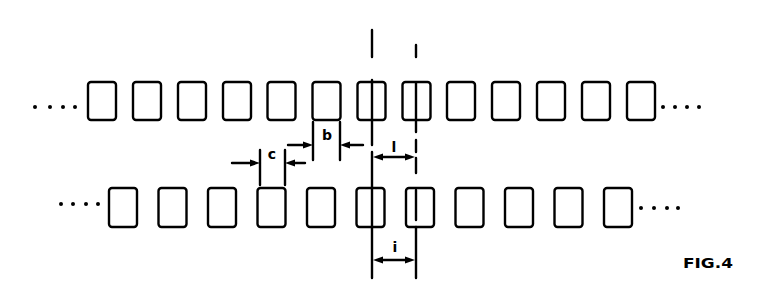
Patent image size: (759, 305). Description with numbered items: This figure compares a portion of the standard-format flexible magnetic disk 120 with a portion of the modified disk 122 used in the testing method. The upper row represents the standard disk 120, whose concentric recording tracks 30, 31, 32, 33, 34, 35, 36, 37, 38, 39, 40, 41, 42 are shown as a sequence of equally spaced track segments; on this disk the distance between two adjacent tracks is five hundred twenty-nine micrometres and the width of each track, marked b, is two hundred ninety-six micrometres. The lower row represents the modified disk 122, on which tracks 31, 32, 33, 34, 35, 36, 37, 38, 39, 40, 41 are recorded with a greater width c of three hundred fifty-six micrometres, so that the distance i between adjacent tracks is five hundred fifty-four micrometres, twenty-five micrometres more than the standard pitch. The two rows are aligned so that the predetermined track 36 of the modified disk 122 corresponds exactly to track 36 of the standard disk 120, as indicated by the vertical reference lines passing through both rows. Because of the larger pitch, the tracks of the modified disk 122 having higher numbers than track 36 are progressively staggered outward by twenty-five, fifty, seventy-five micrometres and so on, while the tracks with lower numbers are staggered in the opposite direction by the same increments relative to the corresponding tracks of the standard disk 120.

The track 30 is at (101, 95).
The track 31 is at (146, 95).
The track 32 is at (191, 95).
The track 33 is at (236, 95).
The track 34 is at (280, 95).
The track 35 is at (325, 95).
The track 36 is at (370, 95).
The track 37 is at (416, 95).
The track 38 is at (460, 95).
The track 39 is at (505, 95).
The track 40 is at (550, 95).
The track 41 is at (595, 95).
The track 42 is at (640, 95).
The flexible magnetic disk 120 is at (84, 121).
The modified disk 122 is at (98, 181).